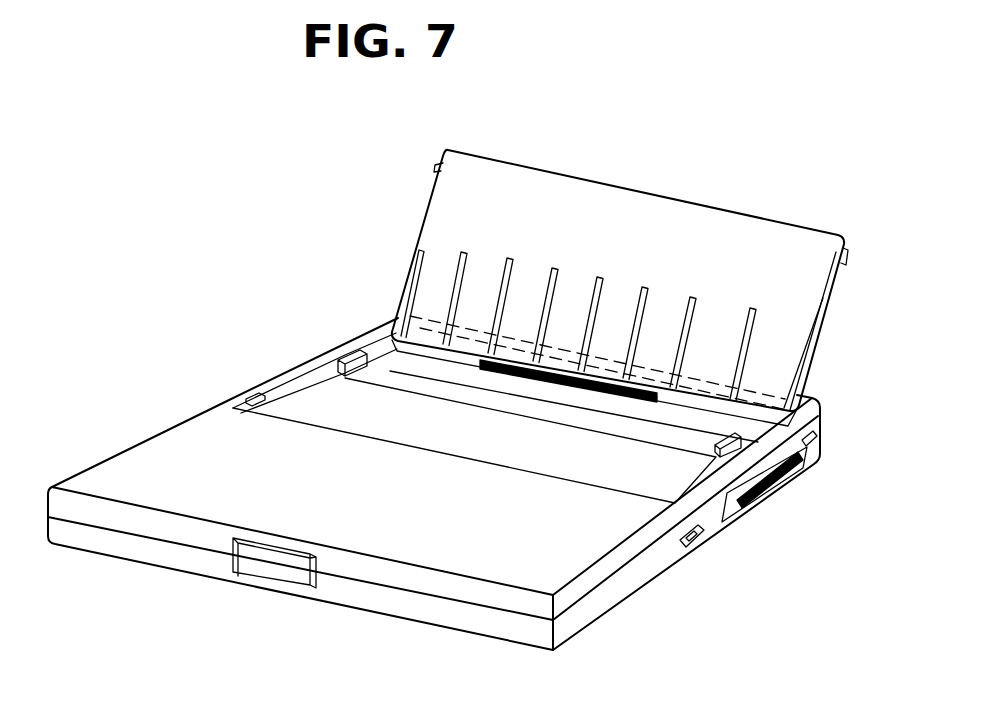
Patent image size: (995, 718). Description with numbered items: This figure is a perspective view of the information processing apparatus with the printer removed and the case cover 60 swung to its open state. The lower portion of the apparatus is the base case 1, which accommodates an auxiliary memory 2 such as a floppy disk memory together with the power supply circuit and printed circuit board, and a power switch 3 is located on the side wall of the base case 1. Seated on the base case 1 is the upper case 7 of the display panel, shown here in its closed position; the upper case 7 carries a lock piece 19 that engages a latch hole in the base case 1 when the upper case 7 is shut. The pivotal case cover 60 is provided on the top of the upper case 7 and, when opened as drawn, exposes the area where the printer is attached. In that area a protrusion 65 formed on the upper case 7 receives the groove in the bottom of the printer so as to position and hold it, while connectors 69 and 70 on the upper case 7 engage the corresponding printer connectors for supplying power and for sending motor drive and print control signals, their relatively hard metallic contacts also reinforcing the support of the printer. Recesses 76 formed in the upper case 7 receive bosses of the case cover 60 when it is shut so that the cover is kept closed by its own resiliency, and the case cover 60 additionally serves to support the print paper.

The base case 1 is at (431, 623).
The auxiliary memory 2 is at (735, 515).
The power switch 3 is at (700, 548).
The upper case 7 is at (152, 452).
The lock piece 19 is at (258, 568).
The case cover 60 is at (655, 197).
The protrusion 65 is at (477, 368).
The connector 69 is at (345, 357).
The connector 70 is at (813, 434).
The recess 76 is at (257, 395).